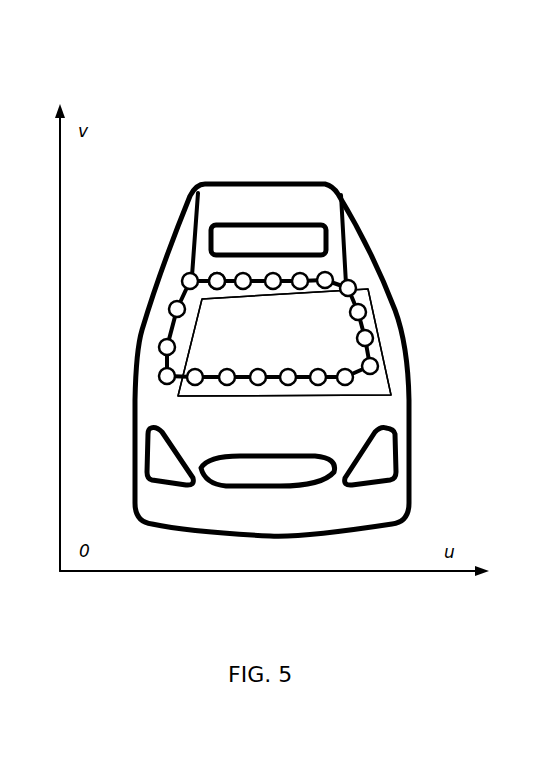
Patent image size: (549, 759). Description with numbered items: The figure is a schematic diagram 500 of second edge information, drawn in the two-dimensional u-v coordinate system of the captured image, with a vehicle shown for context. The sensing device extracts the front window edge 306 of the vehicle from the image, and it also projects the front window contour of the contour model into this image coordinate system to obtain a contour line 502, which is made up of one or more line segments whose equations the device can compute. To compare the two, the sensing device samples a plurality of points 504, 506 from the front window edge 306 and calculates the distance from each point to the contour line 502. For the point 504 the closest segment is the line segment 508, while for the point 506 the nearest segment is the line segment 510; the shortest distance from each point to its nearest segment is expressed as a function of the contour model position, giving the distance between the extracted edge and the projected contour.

The schematic diagram 500 is at (106, 78).
The contour line 502 is at (388, 368).
The point 504 is at (172, 301).
The point 506 is at (212, 272).
The line segment 508 is at (192, 342).
The line segment 510 is at (287, 298).
The front window edge 306 is at (363, 326).